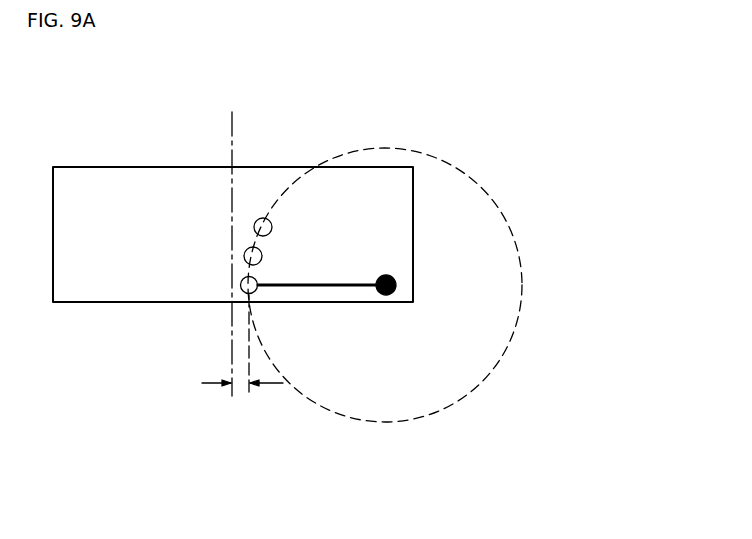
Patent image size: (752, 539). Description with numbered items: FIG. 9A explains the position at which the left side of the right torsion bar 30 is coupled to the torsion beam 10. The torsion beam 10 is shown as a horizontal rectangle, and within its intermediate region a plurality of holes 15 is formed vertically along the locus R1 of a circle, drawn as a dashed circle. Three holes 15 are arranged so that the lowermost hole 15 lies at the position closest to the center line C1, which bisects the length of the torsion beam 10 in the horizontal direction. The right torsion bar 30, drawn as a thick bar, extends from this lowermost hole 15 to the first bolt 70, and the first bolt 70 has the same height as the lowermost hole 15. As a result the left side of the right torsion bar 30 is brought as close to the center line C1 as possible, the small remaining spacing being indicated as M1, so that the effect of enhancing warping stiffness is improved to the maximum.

The torsion beam 10 is at (90, 176).
The holes 15 is at (247, 250).
The right torsion bar 30 is at (326, 288).
The first bolt 70 is at (386, 296).
The center line C1 is at (230, 241).
The locus of the circle R1 is at (386, 147).
The distance to center line M1 is at (242, 359).